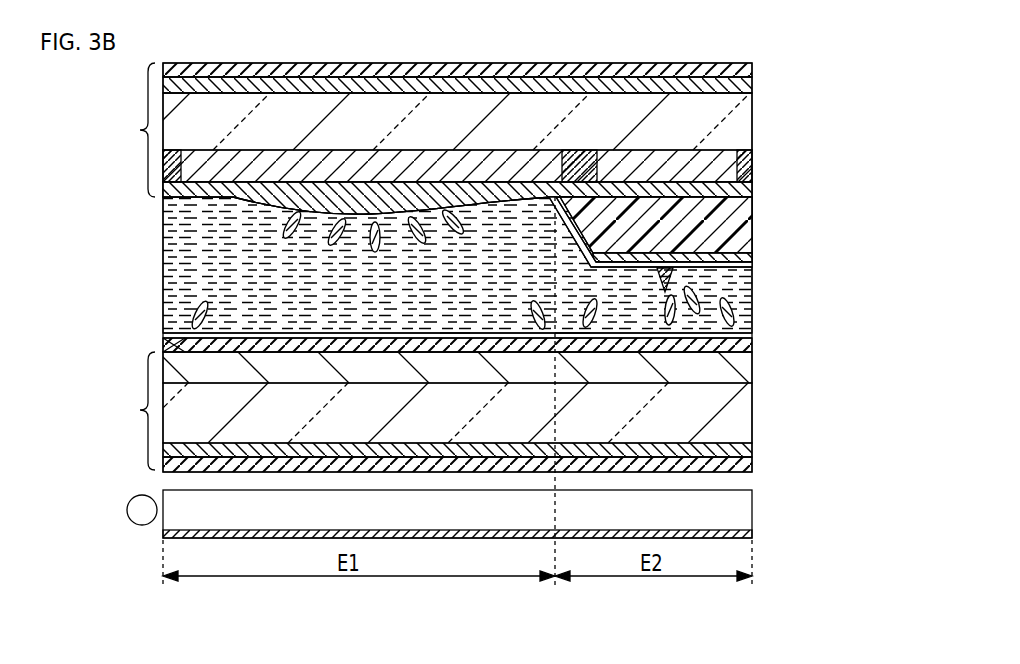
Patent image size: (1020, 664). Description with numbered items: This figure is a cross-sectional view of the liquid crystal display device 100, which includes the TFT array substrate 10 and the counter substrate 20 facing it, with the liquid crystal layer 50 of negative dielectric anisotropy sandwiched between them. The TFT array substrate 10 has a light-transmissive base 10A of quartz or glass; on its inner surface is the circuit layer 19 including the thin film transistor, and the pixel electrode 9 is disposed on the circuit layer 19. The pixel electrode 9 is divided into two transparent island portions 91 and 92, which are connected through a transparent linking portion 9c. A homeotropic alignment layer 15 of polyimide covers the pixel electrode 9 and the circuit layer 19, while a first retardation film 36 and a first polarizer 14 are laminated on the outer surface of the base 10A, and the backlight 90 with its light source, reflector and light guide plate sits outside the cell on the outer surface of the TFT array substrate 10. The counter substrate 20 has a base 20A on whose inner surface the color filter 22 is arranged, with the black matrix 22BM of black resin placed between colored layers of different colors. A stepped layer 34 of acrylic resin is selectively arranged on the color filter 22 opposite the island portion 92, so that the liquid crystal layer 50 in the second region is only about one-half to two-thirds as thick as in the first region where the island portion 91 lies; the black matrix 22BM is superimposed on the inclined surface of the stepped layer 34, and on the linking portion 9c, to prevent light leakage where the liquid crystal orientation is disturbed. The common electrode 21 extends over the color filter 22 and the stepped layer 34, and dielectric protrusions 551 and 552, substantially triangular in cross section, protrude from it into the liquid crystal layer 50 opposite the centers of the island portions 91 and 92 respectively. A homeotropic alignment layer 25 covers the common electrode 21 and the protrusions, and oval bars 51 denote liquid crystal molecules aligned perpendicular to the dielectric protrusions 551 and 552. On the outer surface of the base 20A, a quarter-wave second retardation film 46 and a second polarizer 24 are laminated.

The liquid crystal display device 100 is at (840, 50).
The counter substrate 20 is at (133, 130).
The TFT array substrate 10 is at (133, 411).
The second polarizer 24 is at (752, 70).
The second retardation film 46 is at (752, 87).
The base 20A is at (752, 126).
The color filter 22 is at (752, 153).
The black matrix 22BM is at (571, 150).
The dielectric protrusion 551 is at (246, 201).
The stepped layer 34 is at (752, 211).
The homeotropic alignment layer 25 is at (752, 272).
The common electrode 21 is at (752, 262).
The dielectric protrusion 552 is at (658, 278).
The liquid crystal layer 50 is at (752, 310).
The liquid crystal molecules 51 is at (293, 243).
The pixel electrode 9 is at (452, 328).
The linking portion 9c is at (568, 333).
The homeotropic alignment layer 15 is at (752, 334).
The island portion 92 is at (752, 346).
The island portion 91 is at (165, 340).
The circuit layer 19 is at (752, 373).
The base 10A is at (752, 412).
The first retardation film 36 is at (752, 450).
The first polarizer 14 is at (752, 468).
The backlight 90 is at (763, 494).